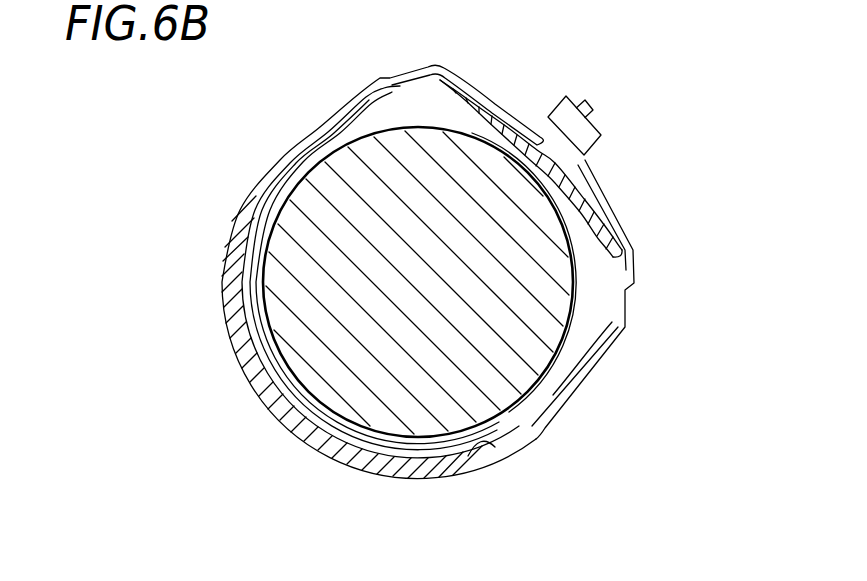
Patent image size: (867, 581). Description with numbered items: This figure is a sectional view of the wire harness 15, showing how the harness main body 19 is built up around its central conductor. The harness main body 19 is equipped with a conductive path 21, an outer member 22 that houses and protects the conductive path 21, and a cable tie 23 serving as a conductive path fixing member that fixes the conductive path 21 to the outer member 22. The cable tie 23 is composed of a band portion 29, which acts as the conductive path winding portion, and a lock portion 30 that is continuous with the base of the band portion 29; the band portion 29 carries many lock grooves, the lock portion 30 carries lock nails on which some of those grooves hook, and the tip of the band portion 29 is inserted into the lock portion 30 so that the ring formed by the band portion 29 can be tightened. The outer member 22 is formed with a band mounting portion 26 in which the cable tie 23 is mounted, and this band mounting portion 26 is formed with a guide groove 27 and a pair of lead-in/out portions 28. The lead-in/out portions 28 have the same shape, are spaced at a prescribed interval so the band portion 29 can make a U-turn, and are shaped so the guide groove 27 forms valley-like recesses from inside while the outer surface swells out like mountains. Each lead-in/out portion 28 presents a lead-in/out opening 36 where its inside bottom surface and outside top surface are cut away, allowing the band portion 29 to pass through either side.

The wire harness 15 is at (138, 116).
The harness main body 19 is at (220, 130).
The conductive path 21 is at (305, 355).
The outer member 22 is at (280, 434).
The cable tie 23 is at (624, 203).
The band mounting portion 26 is at (587, 384).
The guide groove 27 is at (470, 446).
The lead-in/out portion 28 is at (362, 93).
The band portion 29 is at (370, 432).
The lock portion 30 is at (592, 128).
The lead-in/out opening 36 is at (400, 84).